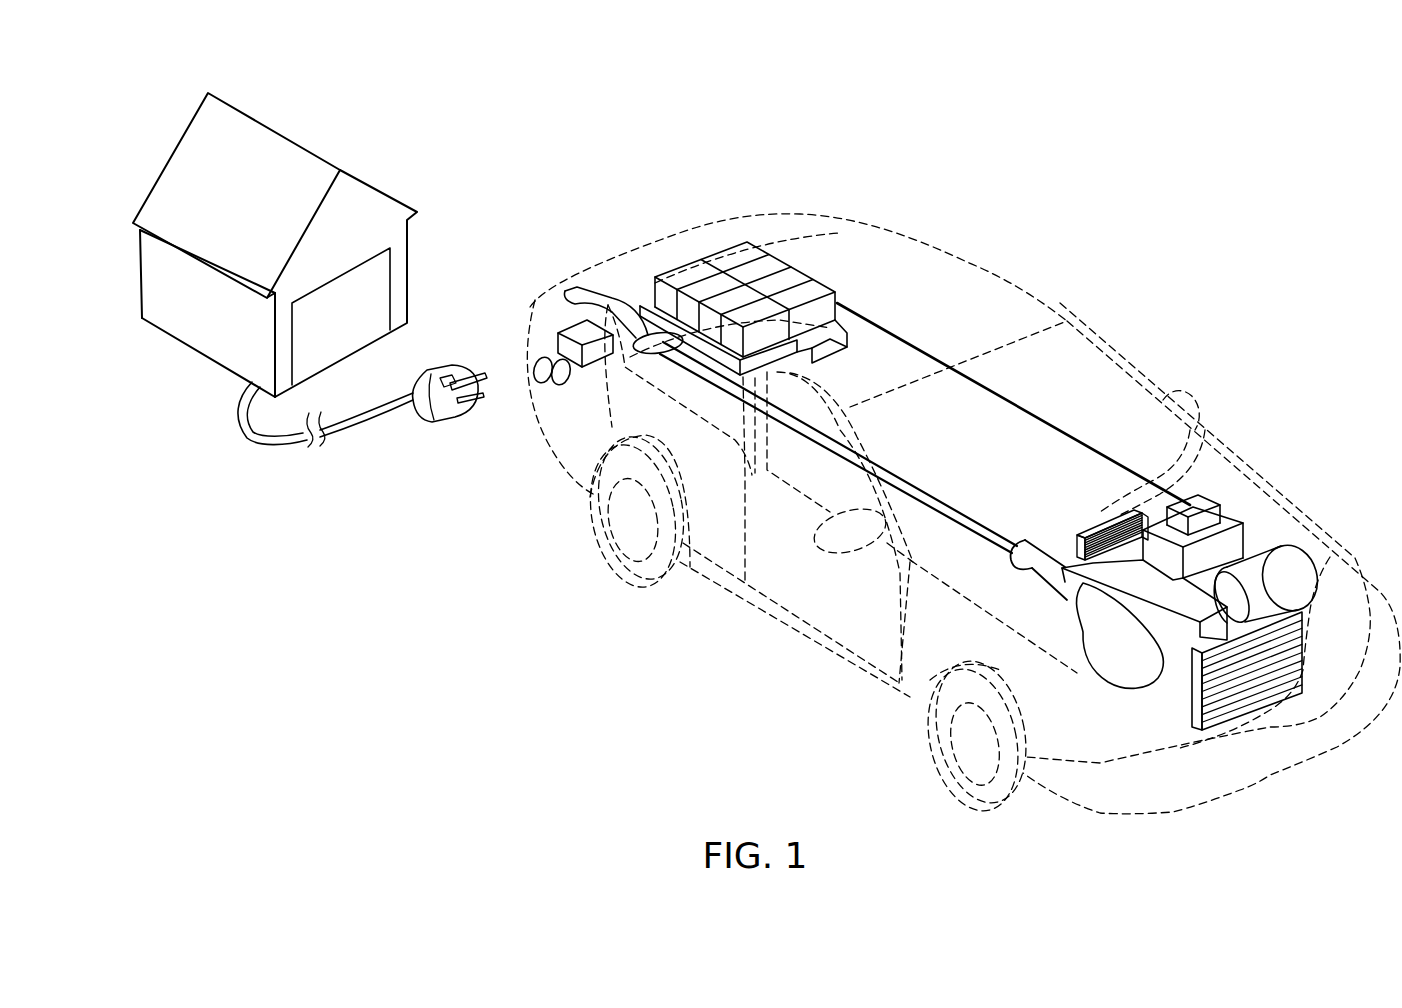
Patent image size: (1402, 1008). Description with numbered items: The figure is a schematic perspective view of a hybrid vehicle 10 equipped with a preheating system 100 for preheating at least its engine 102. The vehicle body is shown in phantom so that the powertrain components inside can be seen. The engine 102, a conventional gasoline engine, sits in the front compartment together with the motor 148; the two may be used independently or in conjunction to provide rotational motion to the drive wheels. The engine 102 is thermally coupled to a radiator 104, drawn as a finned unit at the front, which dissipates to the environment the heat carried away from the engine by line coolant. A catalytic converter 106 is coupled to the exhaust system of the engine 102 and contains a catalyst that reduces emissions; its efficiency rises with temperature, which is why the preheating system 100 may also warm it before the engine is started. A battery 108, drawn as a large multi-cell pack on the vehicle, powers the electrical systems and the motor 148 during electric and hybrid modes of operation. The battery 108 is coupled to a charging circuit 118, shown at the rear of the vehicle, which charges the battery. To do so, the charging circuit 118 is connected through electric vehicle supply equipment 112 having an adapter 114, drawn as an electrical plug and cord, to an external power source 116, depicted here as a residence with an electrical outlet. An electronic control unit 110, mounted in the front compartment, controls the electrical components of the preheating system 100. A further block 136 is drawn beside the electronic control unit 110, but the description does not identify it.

The hybrid vehicle 10 is at (1216, 228).
The preheating system 100 is at (1106, 399).
The engine 102 is at (1105, 662).
The radiator 104 is at (1270, 692).
The catalytic converter 106 is at (1028, 570).
The battery 108 is at (740, 250).
The electronic control unit 110 is at (1233, 500).
The electric vehicle supply equipment 112 is at (449, 304).
The adapter 114 is at (433, 427).
The external power source 116 is at (378, 193).
The charging circuit 118 is at (572, 330).
The controller 136 is at (1105, 530).
The motor 148 is at (1287, 560).